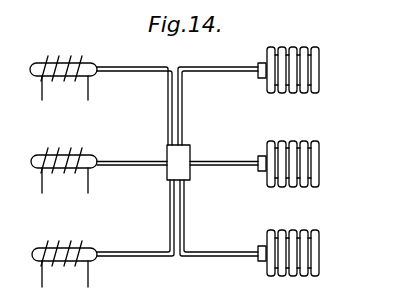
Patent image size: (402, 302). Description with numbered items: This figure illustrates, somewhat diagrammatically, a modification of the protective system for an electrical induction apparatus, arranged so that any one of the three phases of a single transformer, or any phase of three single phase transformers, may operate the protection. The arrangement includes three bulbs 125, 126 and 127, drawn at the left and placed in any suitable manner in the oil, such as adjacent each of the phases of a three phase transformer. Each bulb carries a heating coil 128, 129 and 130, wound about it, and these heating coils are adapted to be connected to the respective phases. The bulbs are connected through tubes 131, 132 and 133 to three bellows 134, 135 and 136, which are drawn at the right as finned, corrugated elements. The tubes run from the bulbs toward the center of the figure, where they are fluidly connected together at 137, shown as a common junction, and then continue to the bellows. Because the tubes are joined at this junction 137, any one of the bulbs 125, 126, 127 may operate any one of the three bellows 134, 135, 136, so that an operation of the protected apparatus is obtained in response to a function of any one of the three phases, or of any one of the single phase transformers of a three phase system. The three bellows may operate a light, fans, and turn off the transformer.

The bulb 125 is at (99, 261).
The bulb 126 is at (98, 167).
The bulb 127 is at (100, 74).
The heating coil 128 is at (60, 62).
The heating coil 129 is at (62, 154).
The heating coil 130 is at (63, 247).
The tube 131 is at (146, 66).
The tube 132 is at (143, 160).
The tube 133 is at (166, 257).
The bellows 134 is at (320, 72).
The bellows 135 is at (320, 165).
The bellows 136 is at (320, 252).
The fluid connection 137 is at (191, 150).